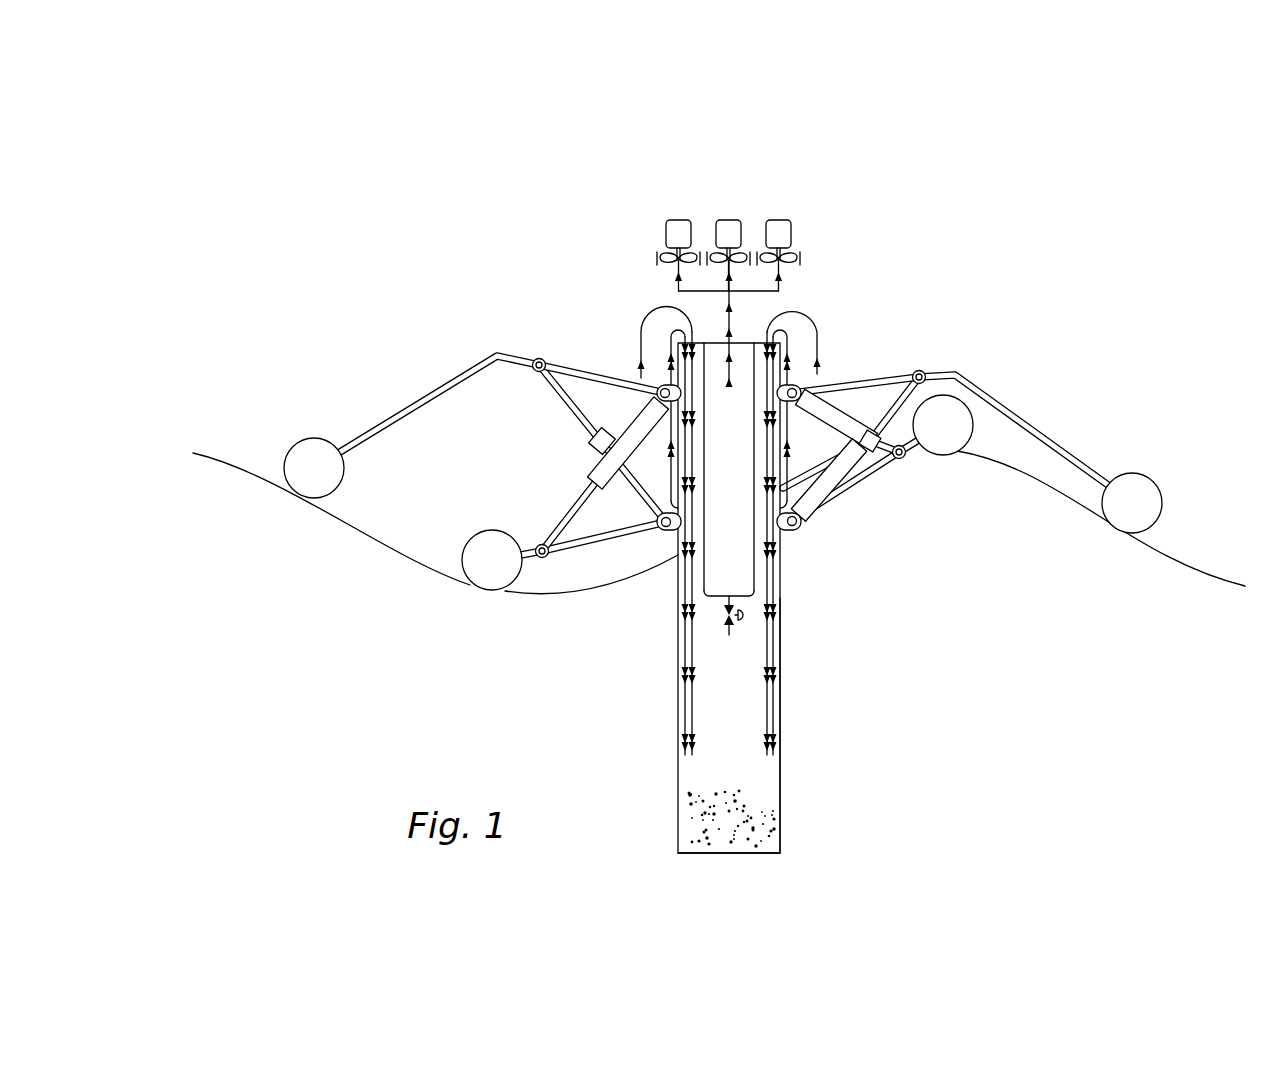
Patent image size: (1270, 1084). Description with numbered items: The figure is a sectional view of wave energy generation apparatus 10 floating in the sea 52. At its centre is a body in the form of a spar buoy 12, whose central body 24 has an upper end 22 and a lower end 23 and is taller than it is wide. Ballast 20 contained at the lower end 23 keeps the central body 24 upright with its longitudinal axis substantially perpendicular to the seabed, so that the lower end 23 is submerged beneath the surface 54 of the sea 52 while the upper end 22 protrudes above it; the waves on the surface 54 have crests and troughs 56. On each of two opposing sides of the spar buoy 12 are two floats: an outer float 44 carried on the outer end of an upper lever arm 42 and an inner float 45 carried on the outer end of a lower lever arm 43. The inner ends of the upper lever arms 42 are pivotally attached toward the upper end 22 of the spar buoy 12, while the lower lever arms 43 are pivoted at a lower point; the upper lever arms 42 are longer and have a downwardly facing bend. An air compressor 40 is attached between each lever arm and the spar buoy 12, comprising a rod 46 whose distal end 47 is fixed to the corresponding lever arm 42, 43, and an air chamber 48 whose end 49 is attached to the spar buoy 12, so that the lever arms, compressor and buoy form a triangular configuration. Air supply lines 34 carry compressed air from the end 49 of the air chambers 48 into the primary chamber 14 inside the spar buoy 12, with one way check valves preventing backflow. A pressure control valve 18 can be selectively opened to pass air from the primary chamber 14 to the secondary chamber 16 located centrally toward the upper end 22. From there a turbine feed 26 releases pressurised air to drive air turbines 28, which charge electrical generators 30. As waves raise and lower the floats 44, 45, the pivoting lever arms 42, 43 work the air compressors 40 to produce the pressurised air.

The wave energy generation apparatus 10 is at (670, 160).
The spar buoy 12 is at (678, 683).
The primary chamber 14 is at (723, 752).
The secondary chamber 16 is at (745, 567).
The pressure control valve 18 is at (735, 628).
The ballast 20 is at (760, 823).
The upper end 22 is at (757, 388).
The lower end 23 is at (777, 773).
The central body 24 is at (780, 557).
The turbine feed 26 is at (730, 320).
The air turbines 28 is at (797, 260).
The electrical generators 30 is at (787, 222).
The air supply lines 34 is at (645, 322).
The air compressor 40 is at (596, 468).
The upper lever arms 42 is at (410, 407).
The lower lever arms 43 is at (613, 540).
The outer floats 44 is at (290, 447).
The inner floats 45 is at (483, 573).
The rod 46 is at (577, 503).
The distal end 47 is at (535, 363).
The air chamber 48 is at (628, 432).
The end of air chamber 49 is at (660, 387).
The sea 52 is at (302, 613).
The surface 54 is at (990, 462).
The troughs 56 is at (527, 597).